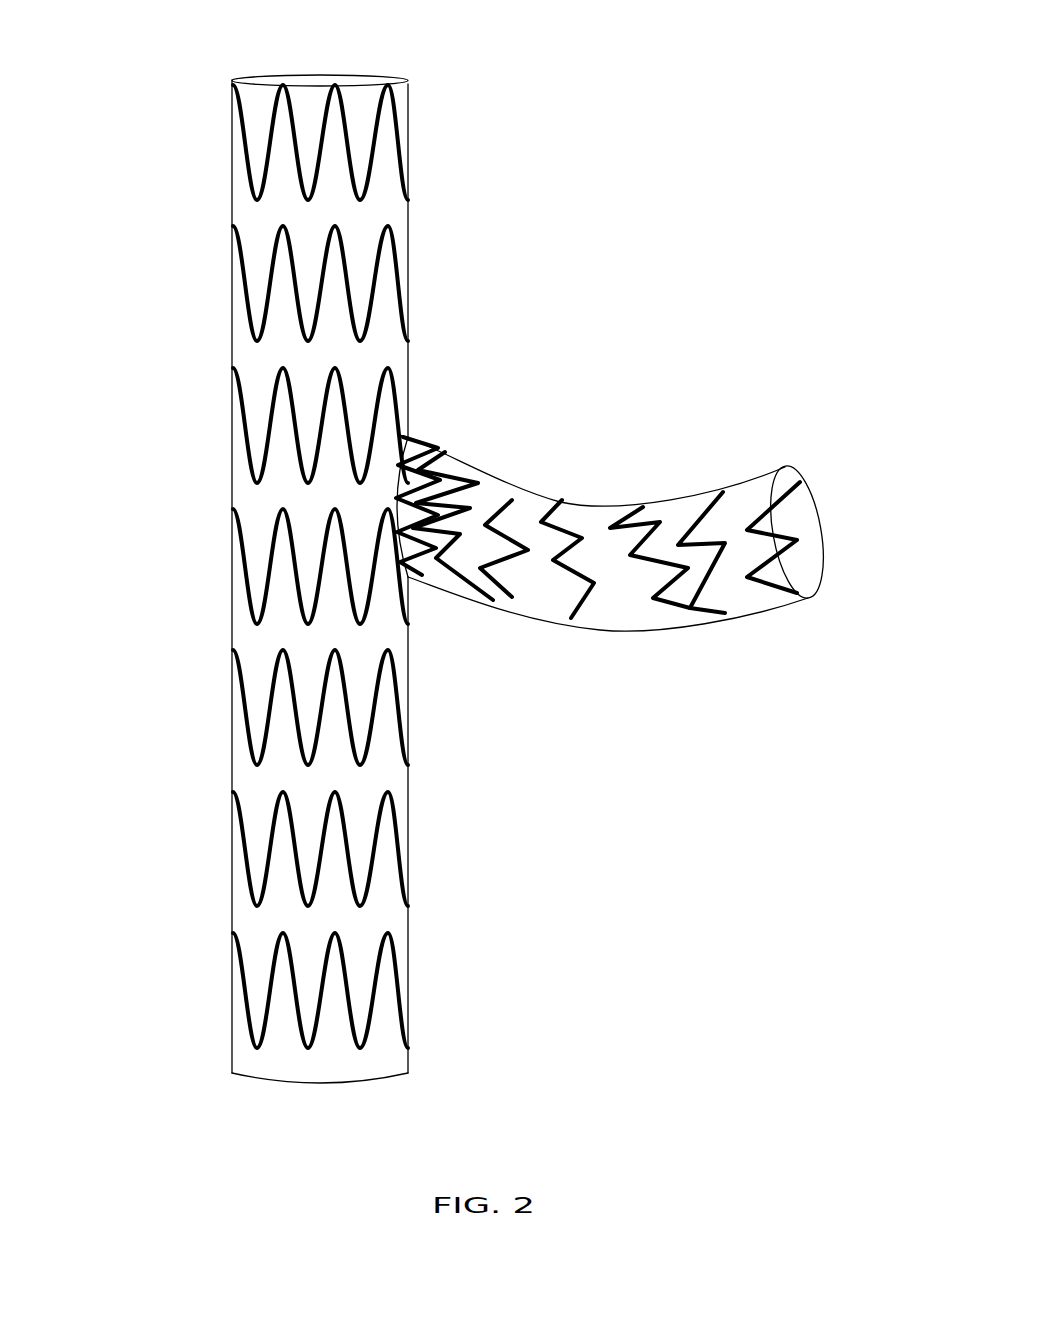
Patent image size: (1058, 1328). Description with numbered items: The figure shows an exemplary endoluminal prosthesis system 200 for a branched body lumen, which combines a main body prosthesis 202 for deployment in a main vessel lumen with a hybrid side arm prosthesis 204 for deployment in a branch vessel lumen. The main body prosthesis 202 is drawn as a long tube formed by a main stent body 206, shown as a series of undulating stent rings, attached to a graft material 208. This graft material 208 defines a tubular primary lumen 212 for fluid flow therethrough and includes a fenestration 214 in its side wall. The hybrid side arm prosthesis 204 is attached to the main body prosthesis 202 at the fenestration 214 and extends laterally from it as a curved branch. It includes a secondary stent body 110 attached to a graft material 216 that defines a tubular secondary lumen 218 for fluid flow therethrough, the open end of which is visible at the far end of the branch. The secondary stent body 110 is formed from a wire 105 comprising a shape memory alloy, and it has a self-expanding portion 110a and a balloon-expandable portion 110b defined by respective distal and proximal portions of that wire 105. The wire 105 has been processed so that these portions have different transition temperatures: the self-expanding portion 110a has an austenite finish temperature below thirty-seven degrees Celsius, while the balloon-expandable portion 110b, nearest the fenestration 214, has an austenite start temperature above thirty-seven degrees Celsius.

The endoluminal prosthesis system 200 is at (540, 48).
The main body prosthesis 202 is at (411, 205).
The hybrid side arm prosthesis 204 is at (748, 470).
The main stent body 206 is at (268, 442).
The graft material 208 is at (232, 467).
The tubular primary lumen 212 is at (322, 1097).
The fenestration 214 is at (407, 437).
The graft material 216 is at (735, 607).
The tubular secondary lumen 218 is at (810, 550).
The secondary stent body 110 is at (806, 403).
The self-expanding portion 110a is at (605, 505).
The balloon-expandable portion 110b is at (450, 448).
The wire 105 is at (658, 598).